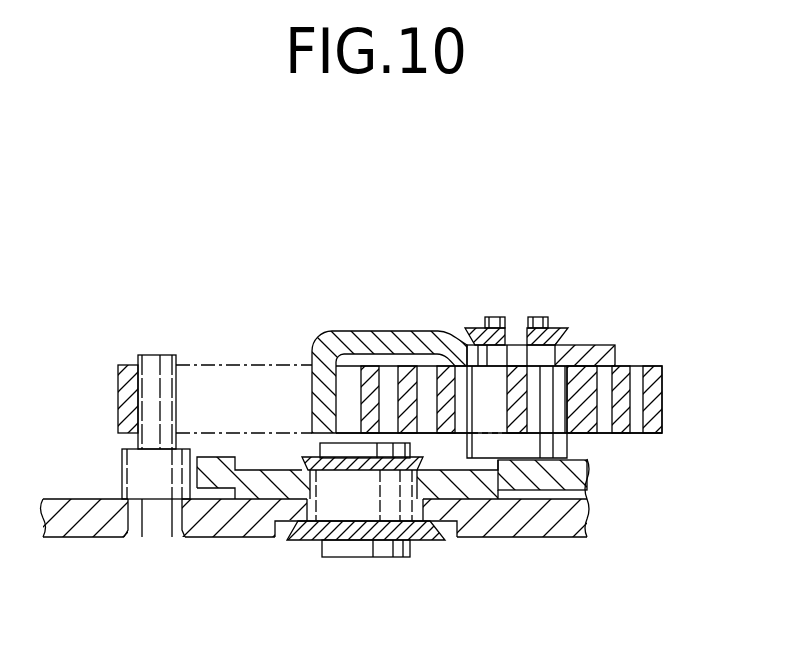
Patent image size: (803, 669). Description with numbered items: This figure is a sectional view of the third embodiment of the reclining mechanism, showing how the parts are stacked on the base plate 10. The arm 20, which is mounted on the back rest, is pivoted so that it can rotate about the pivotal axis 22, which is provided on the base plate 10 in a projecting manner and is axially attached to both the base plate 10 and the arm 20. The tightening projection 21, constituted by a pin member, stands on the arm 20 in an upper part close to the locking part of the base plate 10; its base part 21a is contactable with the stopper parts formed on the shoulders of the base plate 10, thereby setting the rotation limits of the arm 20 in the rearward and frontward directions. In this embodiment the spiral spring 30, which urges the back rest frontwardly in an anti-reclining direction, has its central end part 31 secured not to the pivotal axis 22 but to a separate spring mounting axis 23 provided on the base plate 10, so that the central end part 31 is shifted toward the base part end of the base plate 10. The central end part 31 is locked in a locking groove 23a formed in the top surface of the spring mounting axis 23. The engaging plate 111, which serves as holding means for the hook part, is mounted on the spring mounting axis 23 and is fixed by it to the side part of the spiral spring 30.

The base plate 10 is at (575, 478).
The arm 20 is at (80, 520).
The tightening projection 21 is at (157, 355).
The base part 21a is at (118, 482).
The pivotal axis 22 is at (357, 487).
The spring mounting axis 23 is at (558, 447).
The locking groove 23a is at (515, 460).
The spiral spring 30 is at (662, 395).
The central end part 31 is at (516, 378).
The engaging plate 111 is at (392, 330).